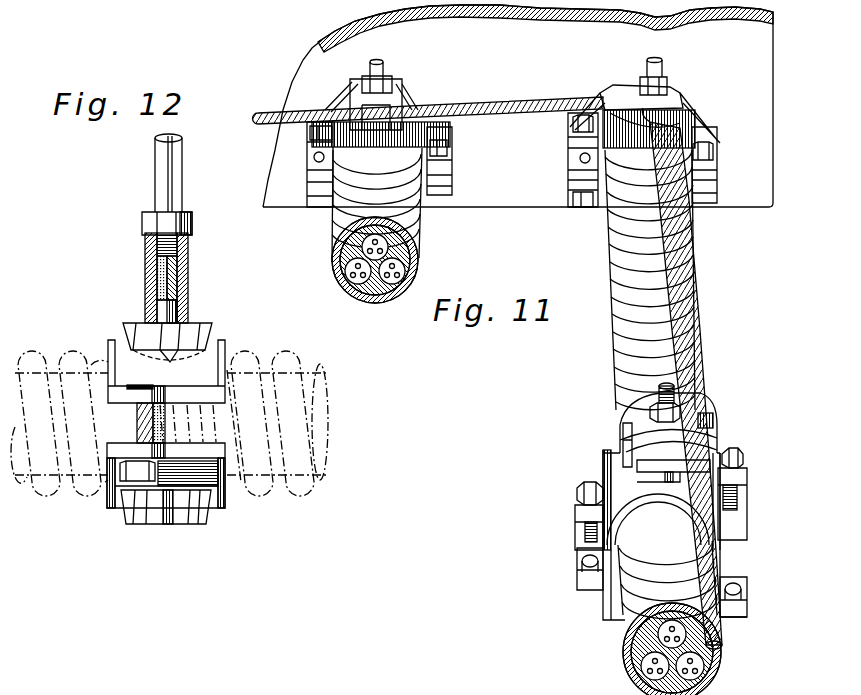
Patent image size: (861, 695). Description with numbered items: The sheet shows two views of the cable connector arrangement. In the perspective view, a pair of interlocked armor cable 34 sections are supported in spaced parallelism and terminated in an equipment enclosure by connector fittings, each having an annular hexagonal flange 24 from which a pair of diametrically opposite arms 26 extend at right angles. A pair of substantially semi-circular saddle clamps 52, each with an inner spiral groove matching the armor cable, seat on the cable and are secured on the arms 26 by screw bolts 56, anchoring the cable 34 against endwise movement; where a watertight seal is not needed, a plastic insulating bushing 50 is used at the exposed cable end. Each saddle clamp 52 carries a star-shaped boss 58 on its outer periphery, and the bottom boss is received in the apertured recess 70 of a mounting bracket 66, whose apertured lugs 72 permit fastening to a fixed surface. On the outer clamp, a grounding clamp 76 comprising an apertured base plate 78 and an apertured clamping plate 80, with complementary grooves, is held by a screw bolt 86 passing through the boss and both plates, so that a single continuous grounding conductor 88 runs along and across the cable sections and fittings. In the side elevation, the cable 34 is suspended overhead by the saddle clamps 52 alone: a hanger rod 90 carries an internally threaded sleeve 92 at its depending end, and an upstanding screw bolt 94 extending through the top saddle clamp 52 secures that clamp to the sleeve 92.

In FIG. 11, the annular hexagonal flange 24 is at (423, 112).
In FIG. 11, the arms 26 is at (575, 158).
In FIG. 12, the interlocked armor cable 34 is at (78, 358).
In FIG. 11, the interlocked armor cable 34 is at (423, 268).
In FIG. 11, the plastic insulating bushing 50 is at (578, 508).
In FIG. 12, the saddle clamps 52 is at (205, 357).
In FIG. 11, the saddle clamps 52 is at (690, 128).
In FIG. 12, the screw bolts 56 is at (123, 473).
In FIG. 11, the screw bolts 56 is at (713, 148).
In FIG. 12, the star-shaped boss 58 is at (202, 333).
In FIG. 11, the mounting bracket 66 is at (610, 598).
In FIG. 11, the apertured recess 70 is at (578, 581).
In FIG. 11, the apertured lugs 72 is at (582, 563).
In FIG. 11, the grounding clamp 76 is at (614, 430).
In FIG. 11, the base plate 78 is at (630, 460).
In FIG. 11, the clamping plate 80 is at (693, 409).
In FIG. 11, the screw bolt 86 is at (657, 394).
In FIG. 11, the continuous grounding conductor 88 is at (700, 305).
In FIG. 12, the hanger rod 90 is at (163, 170).
In FIG. 12, the internally threaded sleeve 92 is at (150, 244).
In FIG. 12, the upstanding screw bolt 94 is at (160, 315).